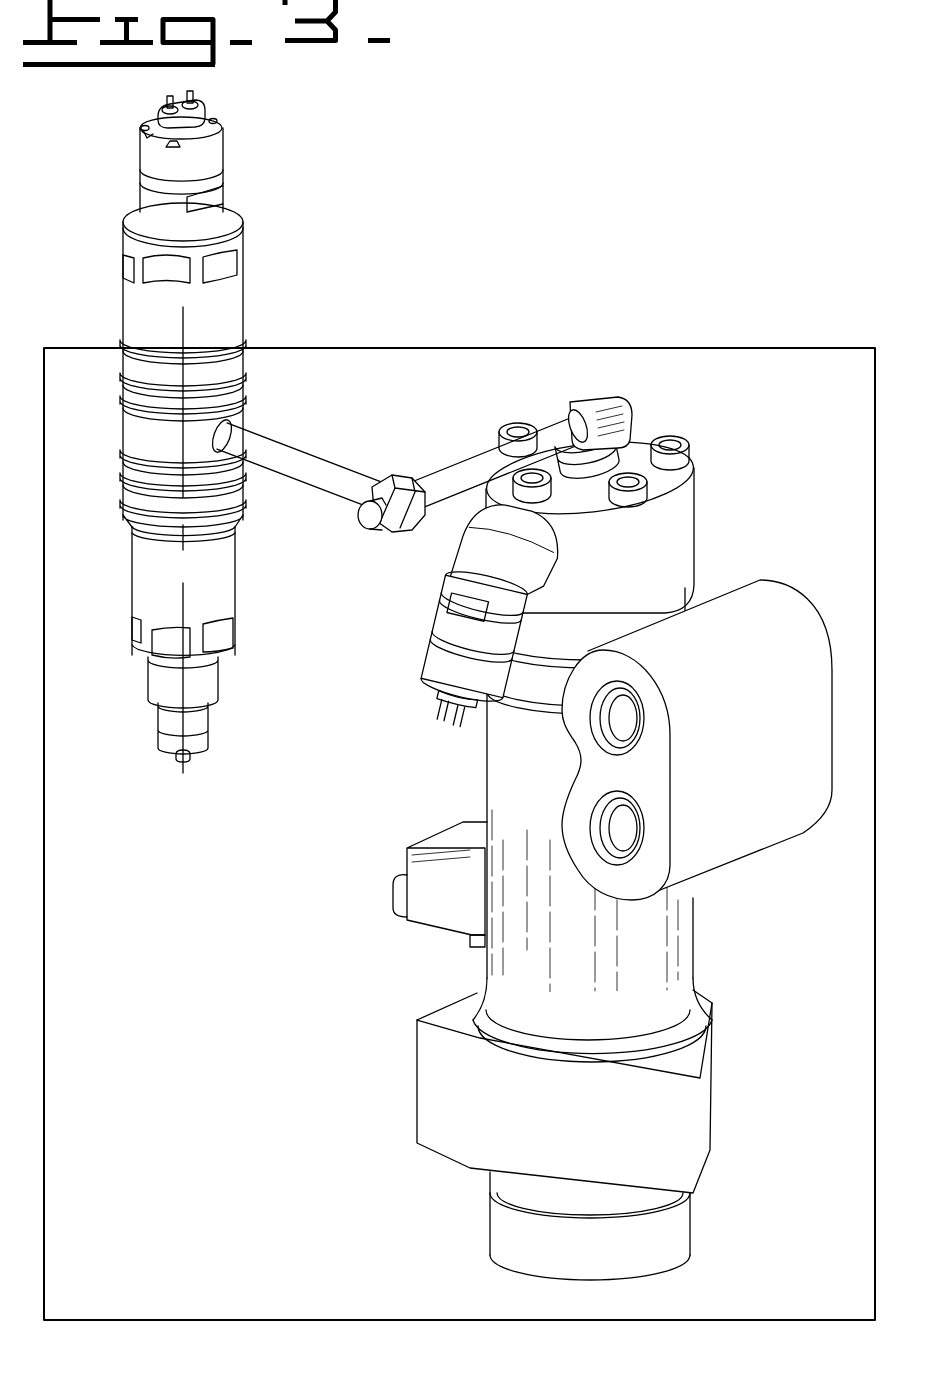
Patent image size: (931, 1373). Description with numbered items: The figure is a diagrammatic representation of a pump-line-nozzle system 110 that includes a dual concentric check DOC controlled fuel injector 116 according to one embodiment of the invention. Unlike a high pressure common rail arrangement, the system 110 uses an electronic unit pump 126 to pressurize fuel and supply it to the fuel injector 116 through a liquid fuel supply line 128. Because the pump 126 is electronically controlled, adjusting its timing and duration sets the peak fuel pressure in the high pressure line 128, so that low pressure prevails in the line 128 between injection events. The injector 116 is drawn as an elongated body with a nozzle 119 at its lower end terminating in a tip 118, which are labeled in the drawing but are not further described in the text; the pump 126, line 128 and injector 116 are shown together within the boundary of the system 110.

The pump-line-nozzle system 110 is at (743, 348).
The dual concentric check DOC controlled fuel injector 116 is at (235, 553).
The injector nozzle tip 118 is at (176, 757).
The injector nozzle 119 is at (182, 718).
The electronic unit pump 126 is at (400, 873).
The liquid fuel supply line 128 is at (310, 452).